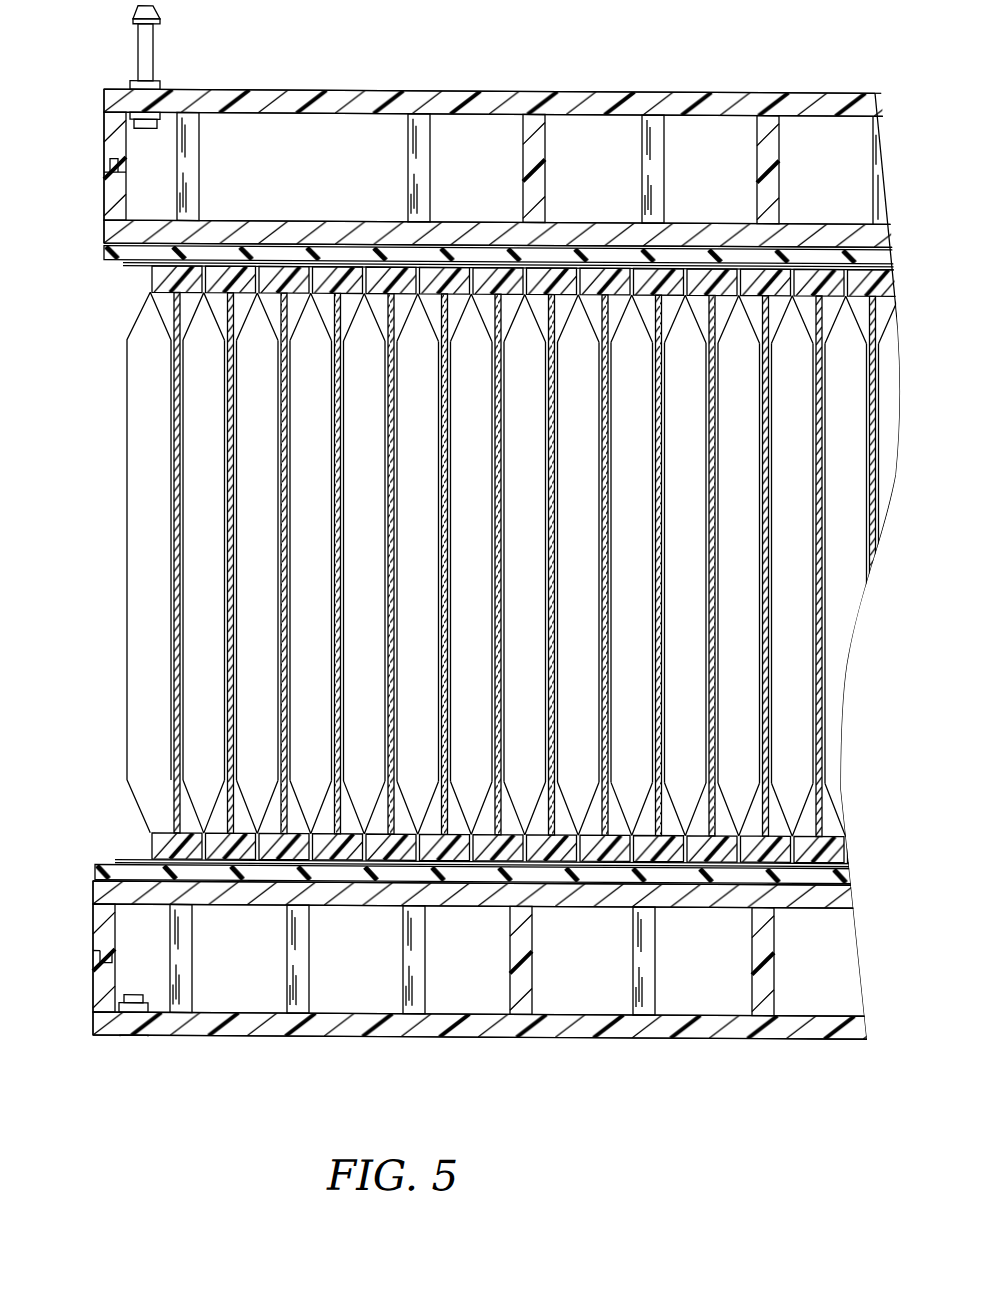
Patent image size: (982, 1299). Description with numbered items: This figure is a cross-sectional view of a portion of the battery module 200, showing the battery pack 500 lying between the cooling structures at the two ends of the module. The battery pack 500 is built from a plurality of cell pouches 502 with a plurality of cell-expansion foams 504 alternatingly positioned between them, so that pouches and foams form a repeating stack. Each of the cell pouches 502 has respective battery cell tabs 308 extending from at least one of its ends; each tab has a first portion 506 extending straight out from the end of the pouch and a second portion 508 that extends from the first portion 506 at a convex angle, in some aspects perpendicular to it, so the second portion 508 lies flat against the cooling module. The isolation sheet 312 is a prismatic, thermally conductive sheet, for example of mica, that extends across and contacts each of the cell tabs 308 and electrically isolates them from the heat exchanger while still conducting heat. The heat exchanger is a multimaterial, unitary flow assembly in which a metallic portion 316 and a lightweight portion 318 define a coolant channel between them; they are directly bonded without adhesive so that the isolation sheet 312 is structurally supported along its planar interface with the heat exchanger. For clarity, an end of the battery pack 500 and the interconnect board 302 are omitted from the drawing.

The battery module 200 is at (723, 26).
The interconnect board 302 is at (148, 832).
The battery cell tabs 308 is at (125, 858).
The isolation sheet 312 is at (104, 255).
The metallic portion 316 is at (108, 198).
The lightweight portion 318 is at (104, 114).
The battery pack 500 is at (112, 398).
The cell pouches 502 is at (150, 613).
The cell-expansion foams 504 is at (170, 723).
The first portion 506 is at (152, 290).
The second portion 508 is at (124, 263).